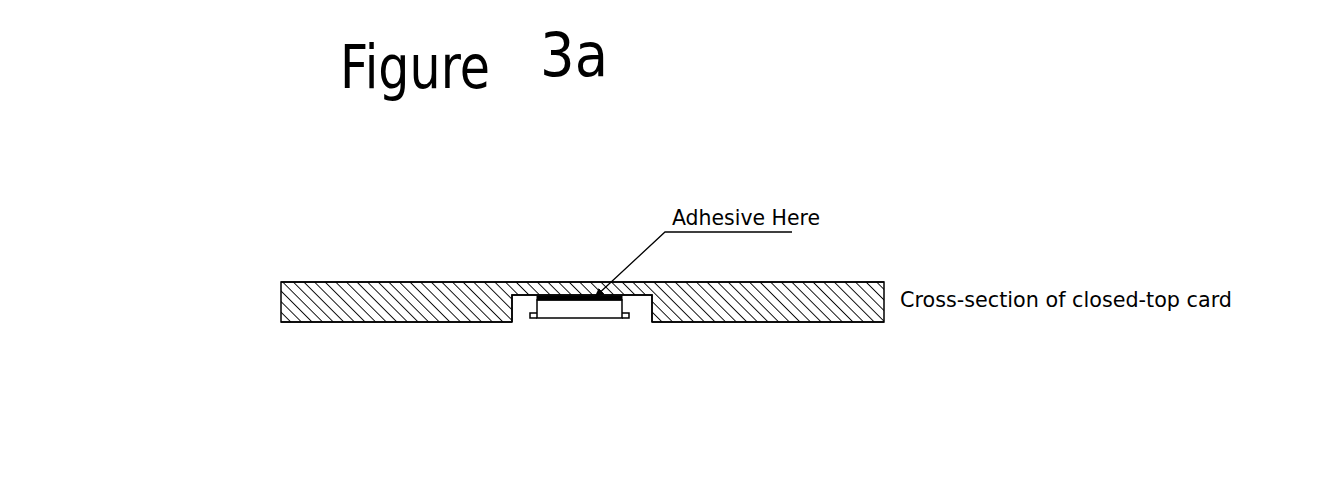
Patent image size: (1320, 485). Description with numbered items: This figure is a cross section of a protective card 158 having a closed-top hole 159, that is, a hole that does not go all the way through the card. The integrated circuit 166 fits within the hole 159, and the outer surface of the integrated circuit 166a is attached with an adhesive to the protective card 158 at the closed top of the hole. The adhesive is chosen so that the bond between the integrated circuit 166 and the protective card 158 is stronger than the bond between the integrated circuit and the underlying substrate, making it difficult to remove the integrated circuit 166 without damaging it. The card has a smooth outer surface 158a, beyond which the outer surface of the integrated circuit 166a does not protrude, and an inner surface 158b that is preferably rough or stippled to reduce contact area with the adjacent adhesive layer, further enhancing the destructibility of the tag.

The protective card 158 is at (272, 300).
The outer surface of the protective card 158a is at (875, 275).
The inner surface of the protective card 158b is at (862, 328).
The hole 159 is at (522, 312).
The integrated circuit 166 is at (588, 310).
The outer surface of the integrated circuit 166a is at (562, 296).